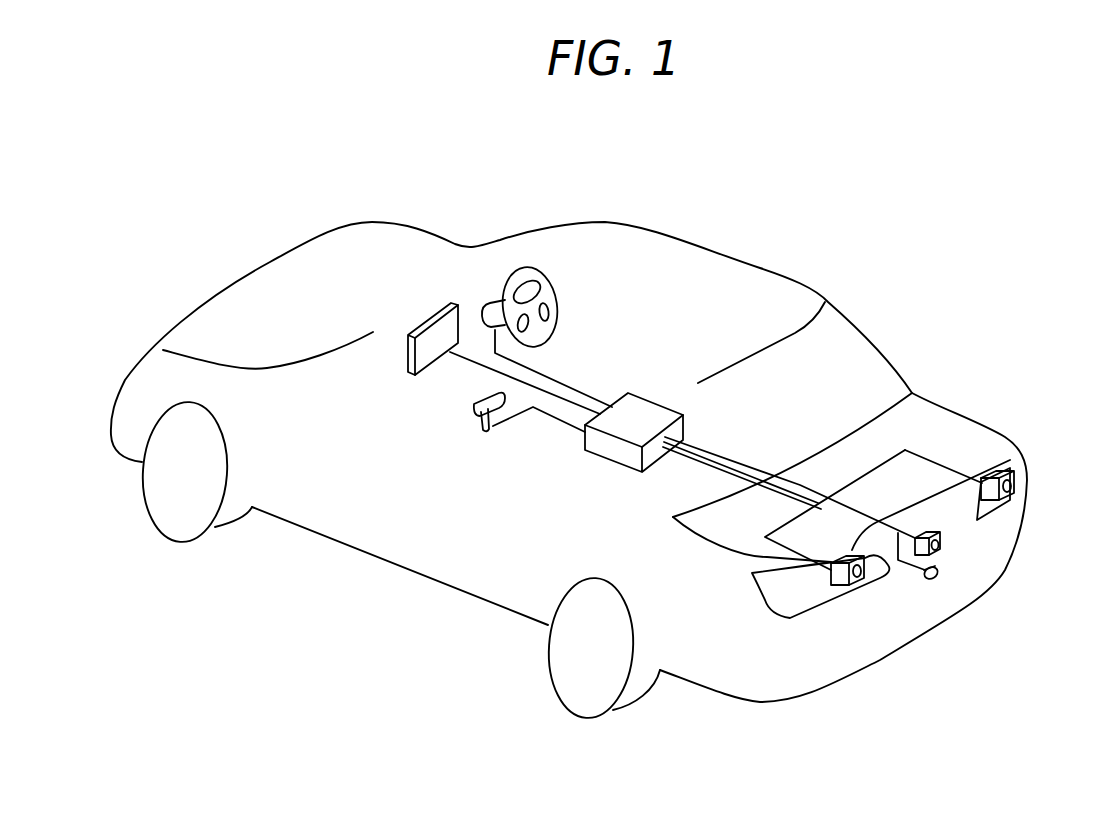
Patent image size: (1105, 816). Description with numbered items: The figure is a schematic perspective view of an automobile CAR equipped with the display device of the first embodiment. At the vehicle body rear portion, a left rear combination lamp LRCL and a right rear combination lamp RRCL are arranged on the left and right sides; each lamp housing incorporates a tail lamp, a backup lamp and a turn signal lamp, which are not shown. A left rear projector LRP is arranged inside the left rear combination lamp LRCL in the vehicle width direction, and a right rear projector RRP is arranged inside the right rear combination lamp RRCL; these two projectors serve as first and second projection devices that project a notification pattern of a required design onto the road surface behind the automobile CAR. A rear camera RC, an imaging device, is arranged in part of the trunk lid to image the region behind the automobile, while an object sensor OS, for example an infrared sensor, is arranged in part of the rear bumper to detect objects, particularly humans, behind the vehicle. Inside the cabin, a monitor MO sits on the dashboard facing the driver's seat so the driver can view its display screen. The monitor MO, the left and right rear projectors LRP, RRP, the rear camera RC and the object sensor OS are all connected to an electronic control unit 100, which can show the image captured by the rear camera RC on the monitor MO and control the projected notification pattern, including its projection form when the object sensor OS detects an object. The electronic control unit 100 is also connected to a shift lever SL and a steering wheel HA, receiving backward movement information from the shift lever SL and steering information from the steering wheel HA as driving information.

The automobile CAR is at (662, 233).
The monitor MO is at (437, 320).
The steering wheel HA is at (527, 262).
The shift lever SL is at (477, 427).
The electronic control unit (ECU) 100 is at (645, 393).
The left rear combination lamp LRCL is at (793, 613).
The left rear projector LRP is at (868, 573).
The rear camera RC is at (943, 545).
The object sensor OS is at (940, 575).
The right rear combination lamp RRCL is at (1025, 457).
The right rear projector RRP is at (1010, 480).